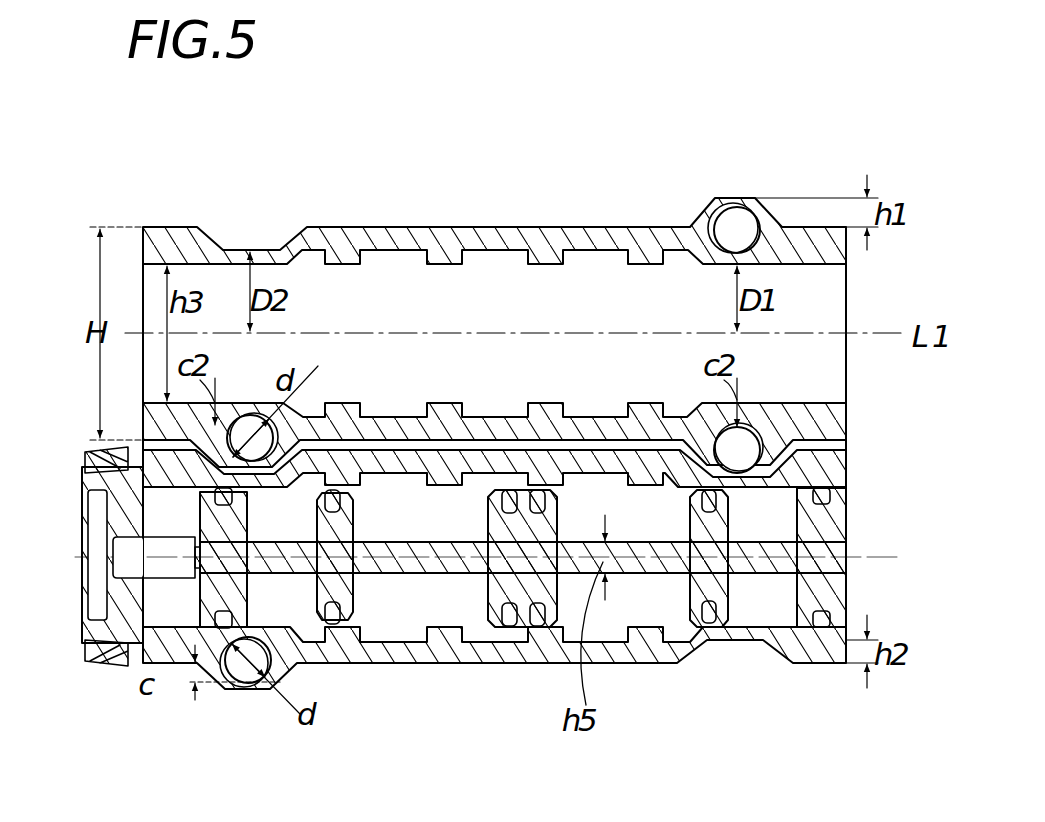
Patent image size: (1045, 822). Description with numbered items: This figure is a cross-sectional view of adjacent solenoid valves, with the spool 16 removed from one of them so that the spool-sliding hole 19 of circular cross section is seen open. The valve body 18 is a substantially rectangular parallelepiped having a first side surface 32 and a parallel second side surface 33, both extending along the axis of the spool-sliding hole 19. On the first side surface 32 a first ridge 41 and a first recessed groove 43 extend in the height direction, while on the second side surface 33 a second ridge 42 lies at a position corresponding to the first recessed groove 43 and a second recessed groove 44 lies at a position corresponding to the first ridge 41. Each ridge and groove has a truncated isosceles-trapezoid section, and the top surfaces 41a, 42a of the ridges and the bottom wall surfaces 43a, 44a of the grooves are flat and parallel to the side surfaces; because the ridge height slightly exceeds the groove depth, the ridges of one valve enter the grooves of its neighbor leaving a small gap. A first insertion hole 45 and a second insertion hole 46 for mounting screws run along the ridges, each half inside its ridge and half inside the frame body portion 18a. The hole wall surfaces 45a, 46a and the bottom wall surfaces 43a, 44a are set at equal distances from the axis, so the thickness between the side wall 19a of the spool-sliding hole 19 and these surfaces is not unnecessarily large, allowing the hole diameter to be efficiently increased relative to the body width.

The spool 16 is at (445, 566).
The valve body 18 is at (463, 200).
The frame body portion 18a is at (768, 235).
The spool-sliding hole 19 is at (525, 318).
The side wall 19a is at (815, 265).
The first side surface 32 is at (492, 440).
The second side surface 33 is at (370, 227).
The first ridge 41 is at (200, 460).
The top surface of first ridge 41a is at (237, 690).
The second ridge 42 is at (731, 205).
The top surface of second ridge 42a is at (740, 222).
The first recessed groove 43 is at (810, 418).
The bottom wall surface of first recessed groove 43a is at (703, 664).
The second recessed groove 44 is at (272, 247).
The bottom wall surface of second recessed groove 44a is at (230, 246).
The first insertion hole 45 is at (248, 415).
The hole wall surface of first insertion hole 45a is at (272, 437).
The second insertion hole 46 is at (743, 226).
The hole wall surface of second insertion hole 46a is at (722, 212).